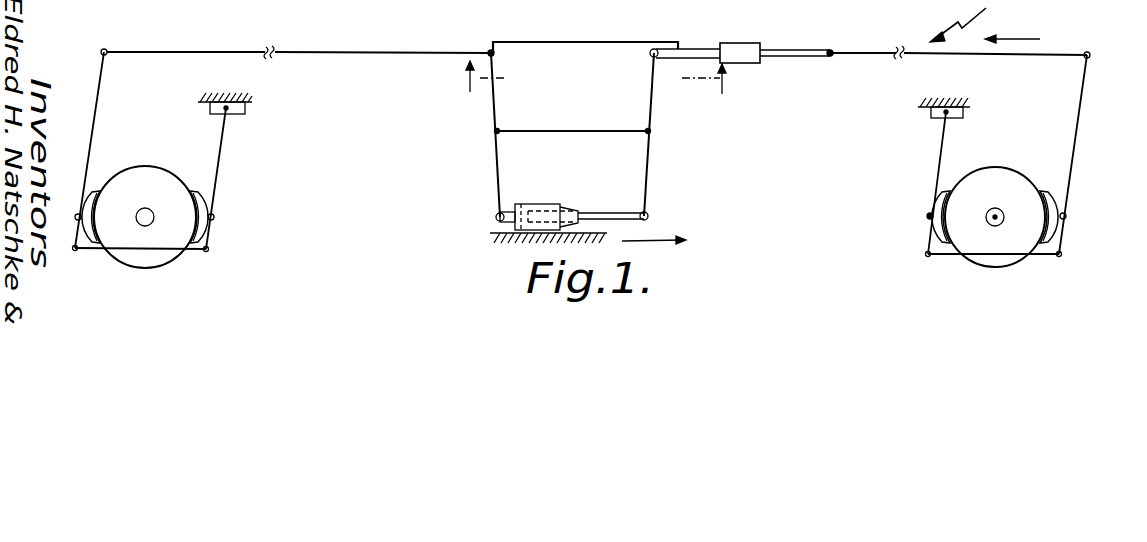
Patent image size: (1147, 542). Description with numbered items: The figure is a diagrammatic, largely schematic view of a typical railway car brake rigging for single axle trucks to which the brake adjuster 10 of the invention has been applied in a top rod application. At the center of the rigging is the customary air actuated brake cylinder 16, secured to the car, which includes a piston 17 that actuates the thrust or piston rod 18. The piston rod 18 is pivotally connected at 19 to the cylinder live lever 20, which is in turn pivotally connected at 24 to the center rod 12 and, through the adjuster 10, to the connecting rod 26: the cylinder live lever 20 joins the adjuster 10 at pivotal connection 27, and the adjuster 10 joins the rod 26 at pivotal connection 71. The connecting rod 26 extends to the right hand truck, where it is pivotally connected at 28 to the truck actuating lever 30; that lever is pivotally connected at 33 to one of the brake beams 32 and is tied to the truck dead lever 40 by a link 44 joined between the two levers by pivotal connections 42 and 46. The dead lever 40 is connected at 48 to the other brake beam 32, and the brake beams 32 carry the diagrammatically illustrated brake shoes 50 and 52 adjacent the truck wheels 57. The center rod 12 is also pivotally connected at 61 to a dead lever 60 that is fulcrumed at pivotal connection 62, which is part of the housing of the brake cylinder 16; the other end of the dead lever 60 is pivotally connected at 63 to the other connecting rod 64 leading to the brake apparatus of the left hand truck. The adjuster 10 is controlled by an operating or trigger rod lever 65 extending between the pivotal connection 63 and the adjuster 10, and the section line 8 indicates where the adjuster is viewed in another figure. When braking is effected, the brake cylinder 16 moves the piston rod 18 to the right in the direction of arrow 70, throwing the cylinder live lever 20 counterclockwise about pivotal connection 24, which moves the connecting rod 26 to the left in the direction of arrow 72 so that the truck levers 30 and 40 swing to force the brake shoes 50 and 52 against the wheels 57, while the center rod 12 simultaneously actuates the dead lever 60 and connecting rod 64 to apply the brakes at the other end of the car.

The section line 8- 8 is at (596, 79).
The brake adjuster 10 is at (758, 33).
The center rod 12 is at (562, 131).
The brake cylinder 16 is at (563, 199).
The piston 17 is at (530, 207).
The piston rod 18 is at (600, 213).
The pivotal connection 19 is at (650, 214).
The cylinder live lever 20 is at (650, 162).
The pivotal connection 24 is at (652, 131).
The connecting rod 26 is at (878, 53).
The pivotal connection 27 is at (648, 55).
The pivotal connection 28 is at (1090, 54).
The truck actuating lever 30 is at (1075, 136).
The brake beams 32 is at (943, 205).
The pivotal connection 33 is at (1068, 216).
The truck dead lever 40 is at (940, 146).
The pivotal connection 42 is at (926, 258).
The link 44 is at (950, 258).
The pivotal connection 46 is at (1062, 254).
The pivotal connection 48 is at (928, 222).
The brake shoe 50 is at (1048, 220).
The brake shoe 52 is at (948, 212).
The truck wheels 57 is at (1003, 176).
The dead lever 60 is at (498, 172).
The pivotal connection 61 is at (495, 133).
The pivotal connection 62 is at (496, 222).
The pivotal connection 63 is at (489, 51).
The connecting rod 64 is at (400, 51).
The trigger rod lever 65 is at (546, 42).
The arrow 70 is at (646, 242).
The pivotal connection 71 is at (832, 50).
The arrow 72 is at (1020, 25).